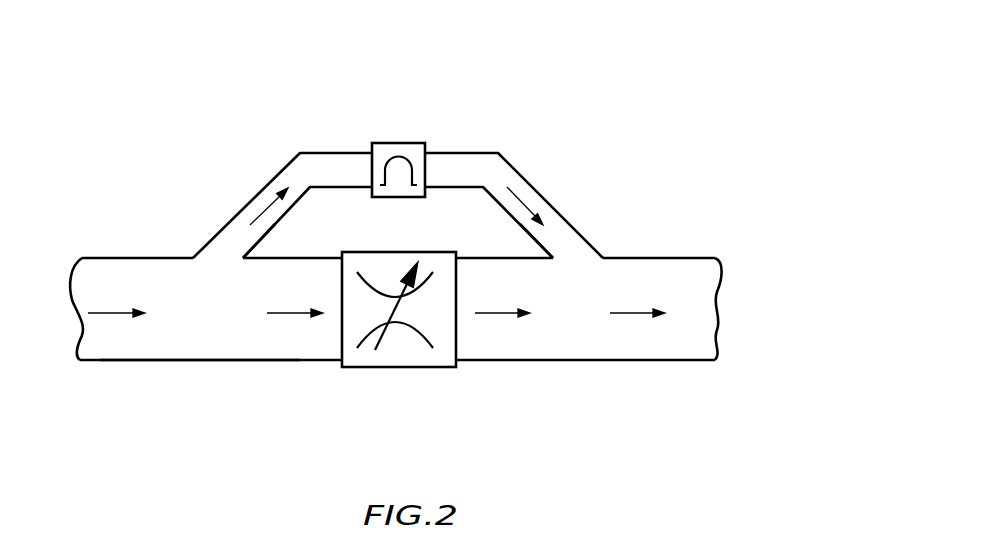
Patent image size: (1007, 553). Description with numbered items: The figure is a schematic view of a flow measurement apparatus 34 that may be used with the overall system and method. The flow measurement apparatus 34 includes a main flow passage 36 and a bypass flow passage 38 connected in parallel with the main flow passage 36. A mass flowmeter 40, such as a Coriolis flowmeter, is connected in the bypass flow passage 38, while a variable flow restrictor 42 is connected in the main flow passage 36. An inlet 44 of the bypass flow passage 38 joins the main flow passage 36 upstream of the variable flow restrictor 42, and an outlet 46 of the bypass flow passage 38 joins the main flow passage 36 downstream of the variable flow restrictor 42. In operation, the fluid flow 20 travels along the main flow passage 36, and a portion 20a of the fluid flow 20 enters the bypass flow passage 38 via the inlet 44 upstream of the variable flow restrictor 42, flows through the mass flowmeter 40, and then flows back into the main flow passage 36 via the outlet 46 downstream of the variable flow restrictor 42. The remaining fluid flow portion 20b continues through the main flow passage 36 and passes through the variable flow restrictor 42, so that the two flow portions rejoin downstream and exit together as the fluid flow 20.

The fluid flow 20 is at (112, 313).
The portion of the fluid flow 20a is at (262, 205).
The fluid flow portion 20b is at (282, 313).
The flow measurement apparatus 34 is at (670, 93).
The main flow passage 36 is at (167, 360).
The bypass flow passage 38 is at (283, 168).
The mass flowmeter 40 is at (393, 143).
The variable flow restrictor 42 is at (428, 367).
The inlet 44 is at (217, 252).
The outlet 46 is at (573, 253).